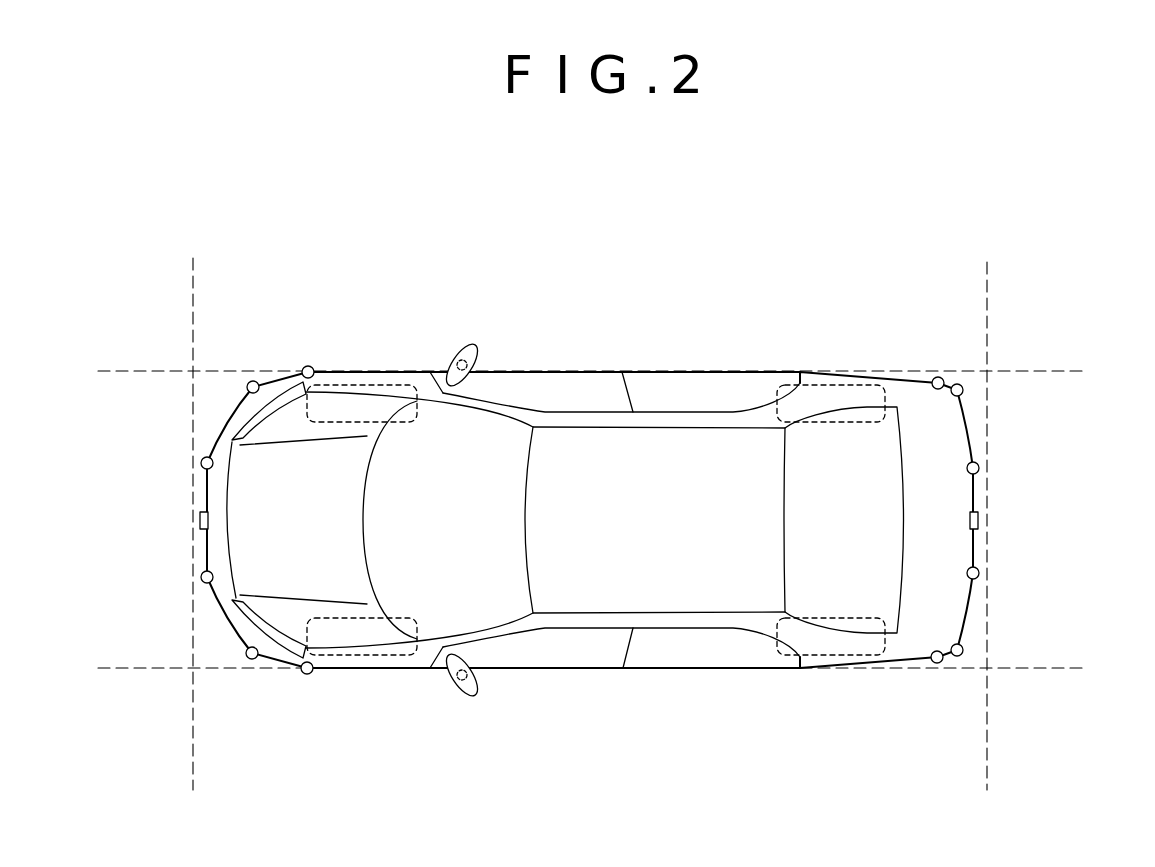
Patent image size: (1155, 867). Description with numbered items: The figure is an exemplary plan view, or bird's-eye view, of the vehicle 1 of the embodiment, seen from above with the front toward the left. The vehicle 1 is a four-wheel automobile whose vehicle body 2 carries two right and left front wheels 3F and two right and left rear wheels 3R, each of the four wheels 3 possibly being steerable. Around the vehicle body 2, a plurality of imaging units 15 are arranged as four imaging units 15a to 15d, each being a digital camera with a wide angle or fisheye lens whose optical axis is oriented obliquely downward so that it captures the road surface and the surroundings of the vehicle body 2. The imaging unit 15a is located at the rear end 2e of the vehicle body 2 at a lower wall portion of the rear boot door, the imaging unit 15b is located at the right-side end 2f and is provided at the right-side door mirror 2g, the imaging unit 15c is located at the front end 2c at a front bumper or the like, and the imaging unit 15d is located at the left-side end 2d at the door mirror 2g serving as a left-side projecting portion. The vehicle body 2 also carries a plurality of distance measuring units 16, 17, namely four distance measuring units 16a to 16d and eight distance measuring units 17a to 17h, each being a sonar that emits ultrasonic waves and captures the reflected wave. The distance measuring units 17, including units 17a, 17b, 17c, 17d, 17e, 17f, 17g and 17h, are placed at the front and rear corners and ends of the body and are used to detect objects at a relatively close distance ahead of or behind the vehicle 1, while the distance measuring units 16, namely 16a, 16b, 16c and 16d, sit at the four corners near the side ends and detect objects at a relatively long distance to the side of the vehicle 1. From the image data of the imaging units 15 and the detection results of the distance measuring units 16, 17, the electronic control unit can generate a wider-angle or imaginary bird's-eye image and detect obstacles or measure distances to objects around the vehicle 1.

The vehicle 1 is at (725, 269).
The vehicle body 2 is at (913, 366).
The front end 2c is at (200, 540).
The left-side end 2d is at (708, 672).
The rear end 2e is at (980, 547).
The right-side end 2f is at (728, 369).
The door mirror 2g is at (480, 349).
The wheels 3 is at (596, 523).
The front wheels 3F is at (370, 383).
The rear wheels 3R is at (828, 383).
The imaging units 15 is at (605, 541).
The imaging unit 15a is at (980, 518).
The imaging unit 15b is at (466, 342).
The imaging unit 15c is at (200, 518).
The imaging unit 15d is at (452, 693).
The distance measuring units 16 is at (600, 505).
The distance measuring unit 16a is at (938, 663).
The distance measuring unit 16b is at (938, 377).
The distance measuring unit 16c is at (306, 366).
The distance measuring unit 16d is at (306, 675).
The distance measuring units 17 is at (596, 486).
The distance measuring unit 17a is at (963, 651).
The distance measuring unit 17b is at (978, 575).
The distance measuring unit 17c is at (977, 464).
The distance measuring unit 17d is at (962, 385).
The distance measuring unit 17e is at (247, 388).
The distance measuring unit 17f is at (201, 463).
The distance measuring unit 17g is at (201, 578).
The distance measuring unit 17h is at (246, 652).